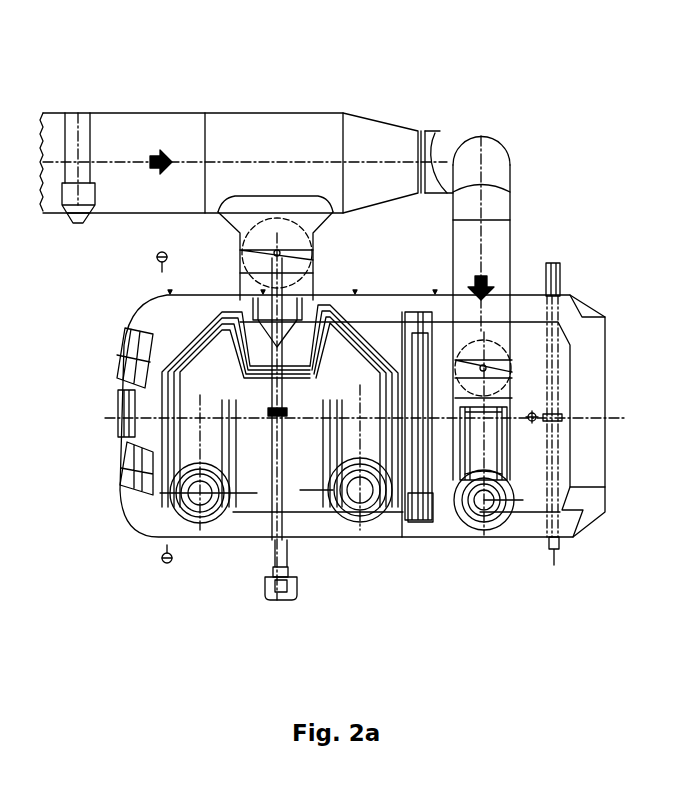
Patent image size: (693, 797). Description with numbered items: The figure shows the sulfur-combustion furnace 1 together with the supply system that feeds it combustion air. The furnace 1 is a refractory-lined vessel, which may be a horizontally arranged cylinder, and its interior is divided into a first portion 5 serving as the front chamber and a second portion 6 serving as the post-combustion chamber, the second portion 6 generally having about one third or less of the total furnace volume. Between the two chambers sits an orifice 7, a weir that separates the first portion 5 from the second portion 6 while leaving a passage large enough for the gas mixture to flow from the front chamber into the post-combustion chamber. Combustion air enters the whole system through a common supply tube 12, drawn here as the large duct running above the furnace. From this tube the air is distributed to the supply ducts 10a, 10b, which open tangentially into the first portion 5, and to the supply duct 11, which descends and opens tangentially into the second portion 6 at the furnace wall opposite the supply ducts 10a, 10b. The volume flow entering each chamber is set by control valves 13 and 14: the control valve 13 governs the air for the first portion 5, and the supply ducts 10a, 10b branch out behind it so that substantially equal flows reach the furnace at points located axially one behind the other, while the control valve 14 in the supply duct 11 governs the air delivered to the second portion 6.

The furnace 1 is at (357, 314).
The first portion 5 is at (313, 462).
The second portion 6 is at (534, 462).
The orifice 7 is at (425, 517).
The supply duct 10a is at (207, 362).
The supply duct 10b is at (348, 367).
The supply duct 11 is at (495, 237).
The common supply tube 12 is at (128, 133).
The control valve 13 is at (300, 263).
The control valve 14 is at (508, 357).